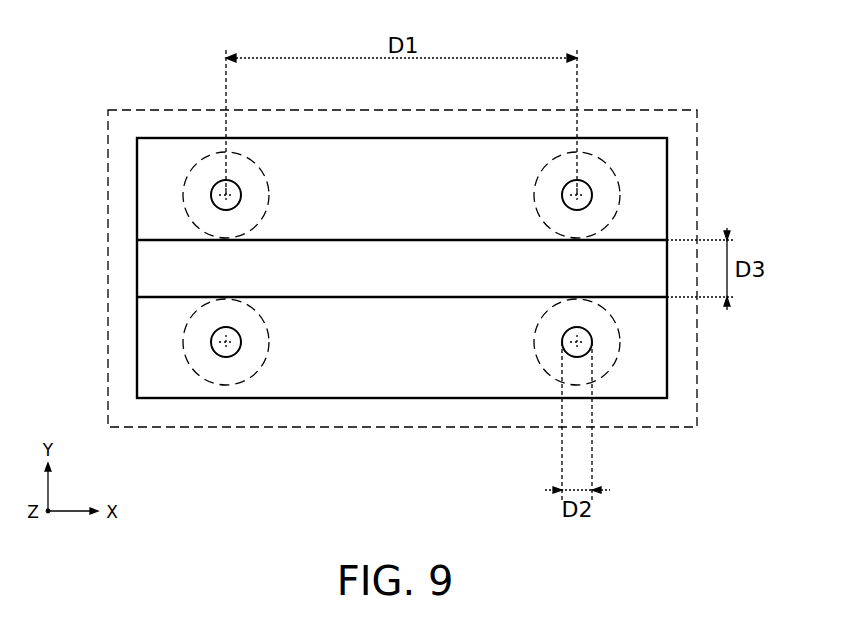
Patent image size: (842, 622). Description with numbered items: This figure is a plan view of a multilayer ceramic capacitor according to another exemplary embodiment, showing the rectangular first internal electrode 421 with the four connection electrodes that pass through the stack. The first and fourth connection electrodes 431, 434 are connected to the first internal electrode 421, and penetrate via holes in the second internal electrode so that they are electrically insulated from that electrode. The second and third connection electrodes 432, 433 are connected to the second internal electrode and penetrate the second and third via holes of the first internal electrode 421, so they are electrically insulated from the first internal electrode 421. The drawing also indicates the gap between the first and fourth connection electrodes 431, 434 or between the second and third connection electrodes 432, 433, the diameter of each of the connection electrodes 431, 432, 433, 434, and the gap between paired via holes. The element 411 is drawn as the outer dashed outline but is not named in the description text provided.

The first substrate 411 is at (346, 410).
The first internal electrode 421 is at (423, 378).
The first connection electrode 431 is at (212, 343).
The second connection electrode 432 is at (214, 195).
The third connection electrode 433 is at (590, 195).
The fourth connection electrode 434 is at (591, 342).